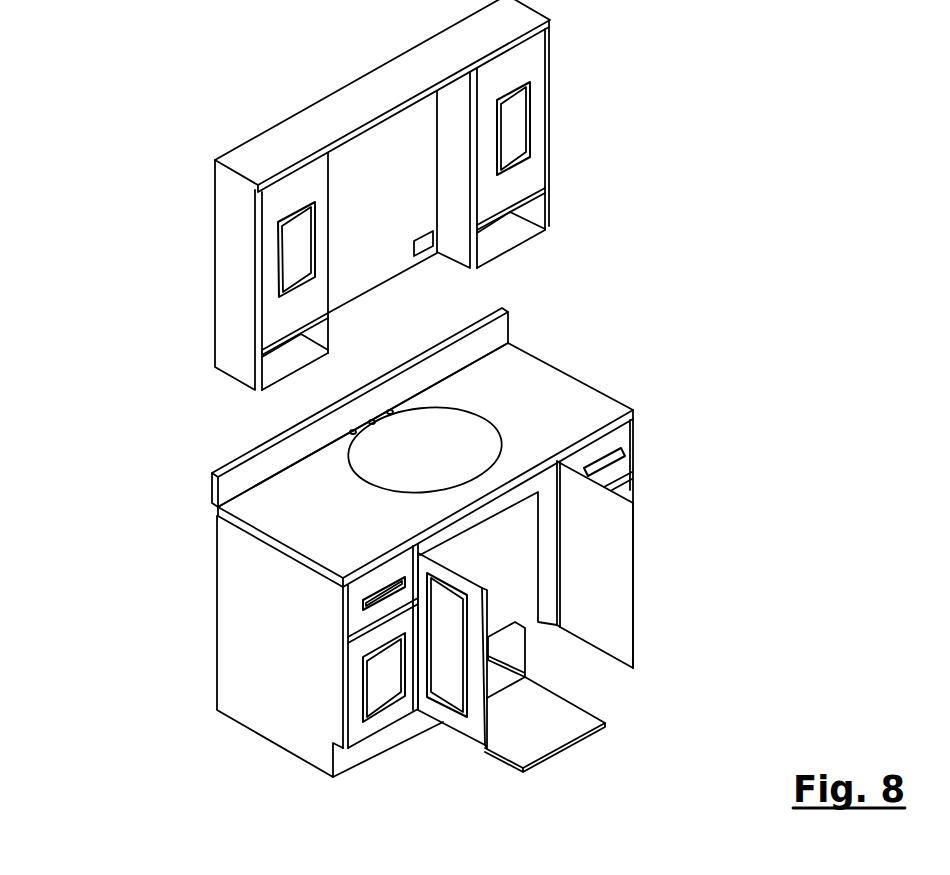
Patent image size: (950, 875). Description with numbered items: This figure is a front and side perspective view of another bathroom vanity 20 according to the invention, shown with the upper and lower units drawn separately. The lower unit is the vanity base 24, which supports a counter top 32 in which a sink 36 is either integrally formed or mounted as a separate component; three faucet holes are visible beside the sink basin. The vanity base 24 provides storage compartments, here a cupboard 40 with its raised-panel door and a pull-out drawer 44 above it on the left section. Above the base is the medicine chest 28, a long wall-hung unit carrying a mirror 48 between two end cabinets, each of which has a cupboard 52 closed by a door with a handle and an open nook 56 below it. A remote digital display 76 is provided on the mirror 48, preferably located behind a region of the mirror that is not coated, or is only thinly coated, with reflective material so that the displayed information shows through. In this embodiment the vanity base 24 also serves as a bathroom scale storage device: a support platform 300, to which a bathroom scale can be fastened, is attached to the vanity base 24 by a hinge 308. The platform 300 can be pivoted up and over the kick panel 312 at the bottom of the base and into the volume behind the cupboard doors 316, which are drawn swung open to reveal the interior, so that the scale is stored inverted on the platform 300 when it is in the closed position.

The bathroom vanity 20 is at (114, 167).
The vanity base 24 is at (662, 440).
The medicine chest 28 is at (565, 88).
The counter top 32 is at (595, 405).
The sink 36 is at (437, 433).
The cupboard 40 is at (375, 697).
The pull-out drawer 44 is at (358, 597).
The mirror 48 is at (402, 210).
The cupboard 52 is at (525, 175).
The nook 56 is at (527, 212).
The remote digital display 76 is at (427, 250).
The support platform 300 is at (572, 715).
The hinge 308 is at (591, 748).
The kick panel 312 is at (357, 753).
The cupboard door 316 is at (617, 605).